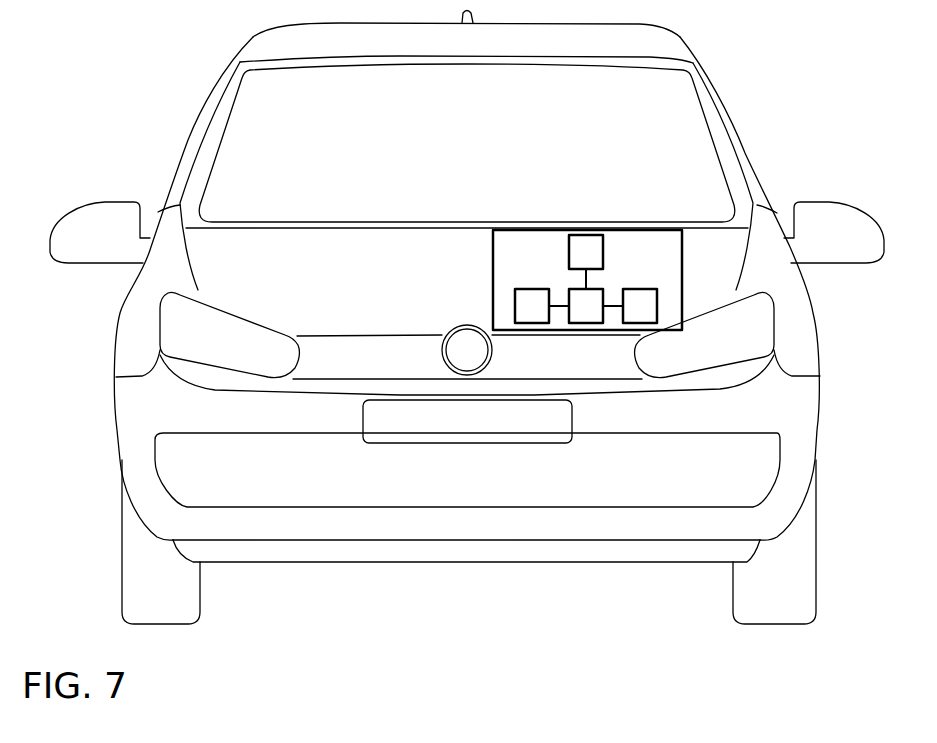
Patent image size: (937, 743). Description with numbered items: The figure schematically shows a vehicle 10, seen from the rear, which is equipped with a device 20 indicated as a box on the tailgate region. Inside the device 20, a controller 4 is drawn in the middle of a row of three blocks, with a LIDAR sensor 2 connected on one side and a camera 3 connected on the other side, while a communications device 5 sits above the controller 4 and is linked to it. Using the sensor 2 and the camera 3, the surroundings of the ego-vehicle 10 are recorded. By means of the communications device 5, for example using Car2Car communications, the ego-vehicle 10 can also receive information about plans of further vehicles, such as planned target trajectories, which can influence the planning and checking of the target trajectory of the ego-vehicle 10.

The vehicle 10 is at (747, 153).
The device 20 is at (556, 280).
The LIDAR sensor 2 is at (532, 306).
The camera 3 is at (640, 306).
The controller 4 is at (586, 306).
The communications device 5 is at (586, 252).